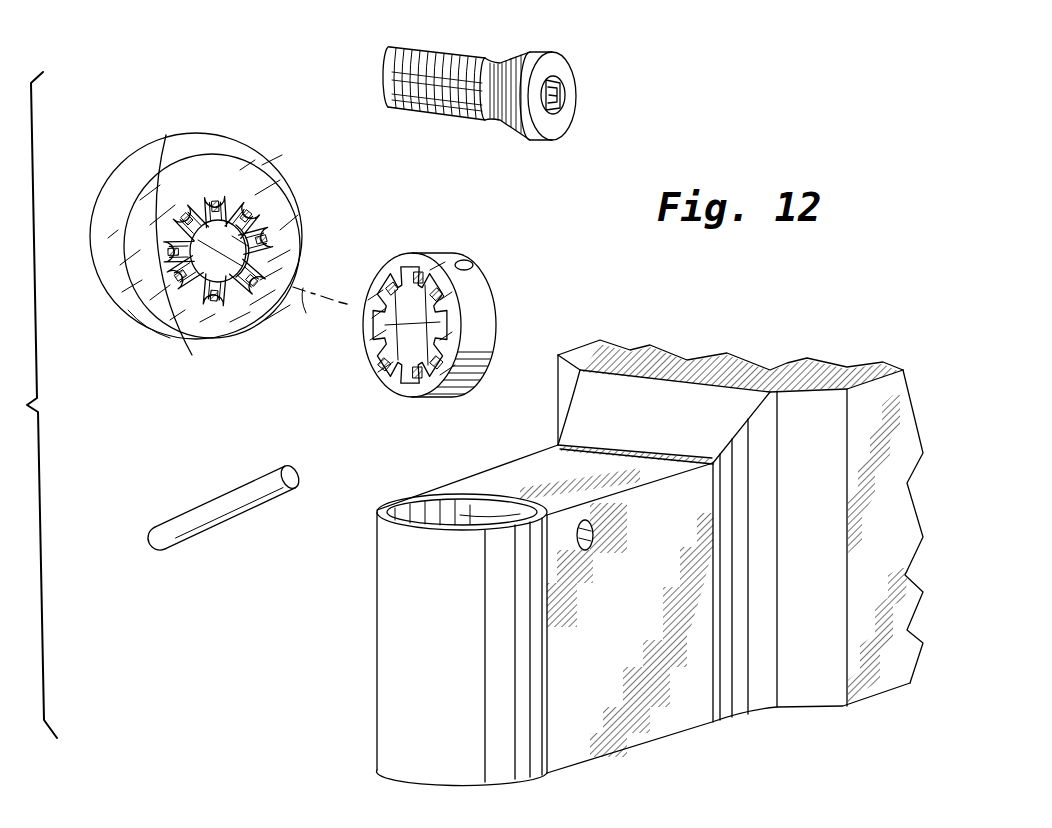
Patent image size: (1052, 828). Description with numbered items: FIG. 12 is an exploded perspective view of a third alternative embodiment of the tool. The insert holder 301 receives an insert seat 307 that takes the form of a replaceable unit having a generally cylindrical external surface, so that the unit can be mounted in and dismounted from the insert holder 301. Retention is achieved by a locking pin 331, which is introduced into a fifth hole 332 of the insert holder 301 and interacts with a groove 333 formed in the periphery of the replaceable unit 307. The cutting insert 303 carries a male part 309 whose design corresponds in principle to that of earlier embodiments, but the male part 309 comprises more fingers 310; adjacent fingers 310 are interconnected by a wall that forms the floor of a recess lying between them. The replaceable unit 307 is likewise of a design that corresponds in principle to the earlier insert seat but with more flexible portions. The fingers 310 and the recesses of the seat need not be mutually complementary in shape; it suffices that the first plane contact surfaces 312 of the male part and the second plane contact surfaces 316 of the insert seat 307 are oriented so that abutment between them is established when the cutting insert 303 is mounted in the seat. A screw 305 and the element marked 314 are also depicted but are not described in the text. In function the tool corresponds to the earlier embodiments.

The insert holder 301 is at (650, 584).
The cutting insert 303 is at (203, 254).
The screw 305 is at (564, 44).
The insert seat 307 is at (446, 313).
The male part 309 is at (163, 293).
The fingers 310 is at (247, 212).
The first plane contact surfaces 312 is at (205, 198).
The toothed opening 314 is at (400, 322).
The second plane contact surfaces 316 is at (437, 262).
The locking pin 331 is at (232, 514).
The fifth hole 332 is at (598, 553).
The groove 333 is at (500, 280).